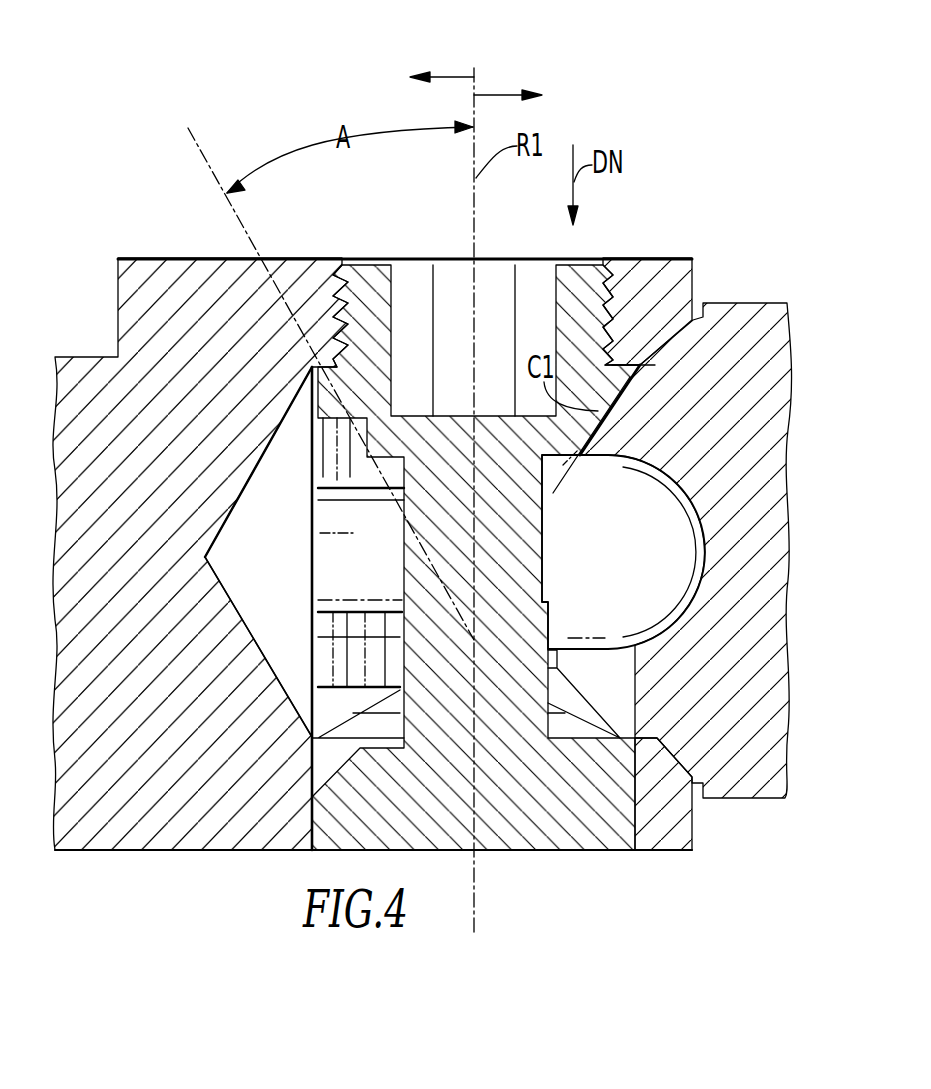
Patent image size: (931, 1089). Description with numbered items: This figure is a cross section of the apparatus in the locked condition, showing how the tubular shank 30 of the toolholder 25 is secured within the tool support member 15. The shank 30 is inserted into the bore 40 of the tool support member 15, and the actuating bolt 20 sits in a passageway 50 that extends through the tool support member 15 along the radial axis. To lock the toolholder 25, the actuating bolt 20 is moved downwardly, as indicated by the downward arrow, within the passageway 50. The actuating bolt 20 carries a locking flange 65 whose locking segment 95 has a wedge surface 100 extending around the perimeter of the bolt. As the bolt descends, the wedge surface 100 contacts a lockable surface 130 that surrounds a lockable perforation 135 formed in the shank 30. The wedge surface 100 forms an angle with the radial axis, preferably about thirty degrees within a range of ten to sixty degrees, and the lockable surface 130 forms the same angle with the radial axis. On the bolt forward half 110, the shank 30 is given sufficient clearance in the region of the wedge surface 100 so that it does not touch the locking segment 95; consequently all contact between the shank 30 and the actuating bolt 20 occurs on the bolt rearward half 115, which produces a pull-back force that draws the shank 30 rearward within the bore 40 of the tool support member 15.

The tool support member 15 is at (92, 356).
The actuating bolt 20 is at (560, 833).
The toolholder 25 is at (735, 303).
The shank 30 is at (318, 657).
The bore 40 is at (262, 540).
The passageway 50 is at (333, 757).
The locking flange 65 is at (372, 333).
The locking segment 95 is at (585, 458).
The wedge surface 100 is at (333, 409).
The bolt forward half 110 is at (497, 95).
The bolt rearward half 115 is at (453, 74).
The lockable surface 130 is at (366, 437).
The lockable perforation 135 is at (542, 498).